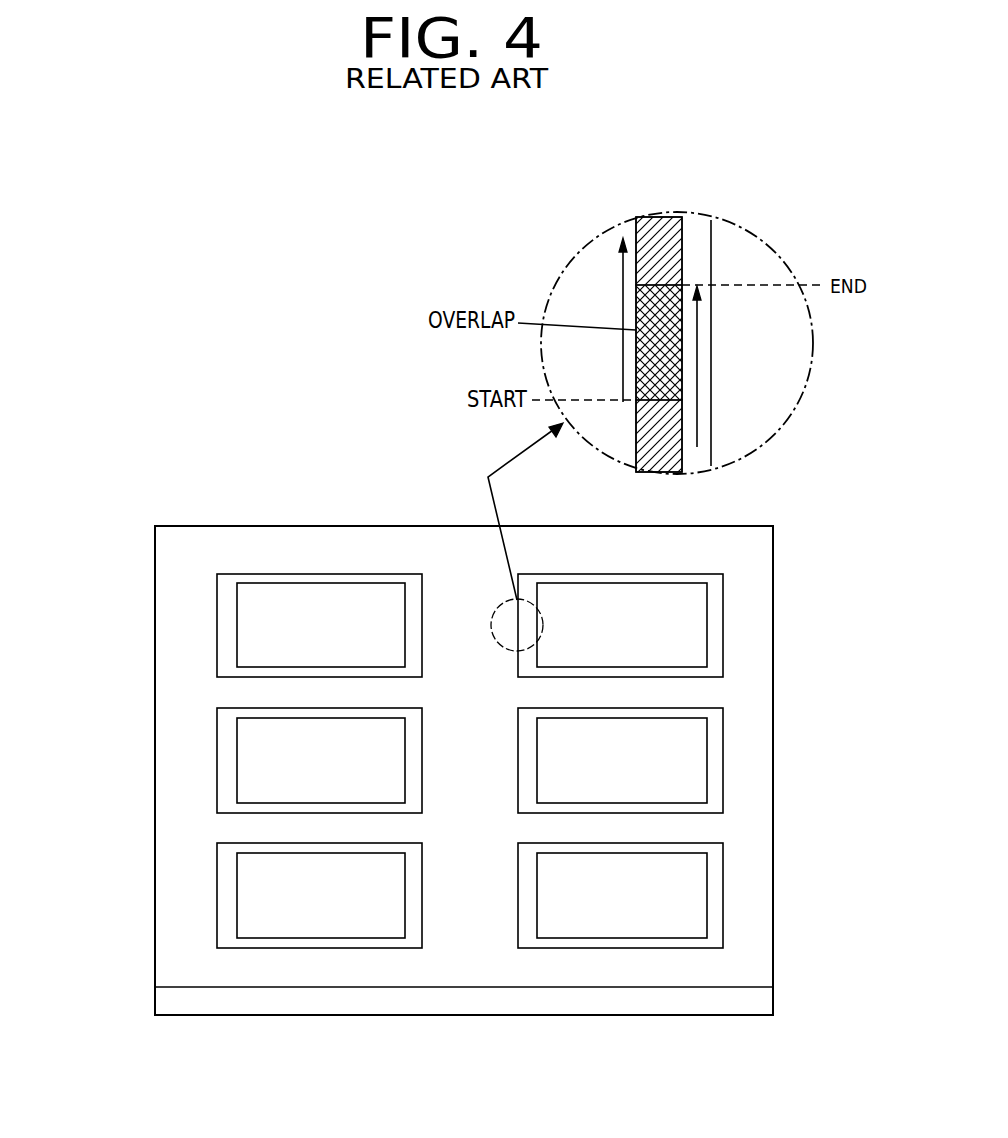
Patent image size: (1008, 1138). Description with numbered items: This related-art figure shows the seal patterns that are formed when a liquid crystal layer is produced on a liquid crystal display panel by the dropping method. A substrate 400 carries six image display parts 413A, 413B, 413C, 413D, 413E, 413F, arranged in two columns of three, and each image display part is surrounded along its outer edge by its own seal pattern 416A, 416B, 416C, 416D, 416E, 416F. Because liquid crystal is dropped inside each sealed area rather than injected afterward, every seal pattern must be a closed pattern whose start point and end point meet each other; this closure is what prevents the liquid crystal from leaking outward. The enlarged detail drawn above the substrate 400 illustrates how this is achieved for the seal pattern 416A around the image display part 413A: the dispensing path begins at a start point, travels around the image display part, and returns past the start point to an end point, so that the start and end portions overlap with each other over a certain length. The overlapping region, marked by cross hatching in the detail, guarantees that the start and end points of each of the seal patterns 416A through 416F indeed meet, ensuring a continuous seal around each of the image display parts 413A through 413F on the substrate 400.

The substrate 400 is at (755, 1004).
The image display part 413A is at (651, 637).
The image display part 413B is at (651, 772).
The image display part 413C is at (651, 908).
The image display part 413D is at (357, 637).
The image display part 413E is at (357, 772).
The image display part 413F is at (357, 908).
The seal pattern 416A is at (659, 216).
The seal pattern 416B is at (723, 759).
The seal pattern 416C is at (723, 896).
The seal pattern 416D is at (217, 626).
The seal pattern 416E is at (217, 761).
The seal pattern 416F is at (217, 898).